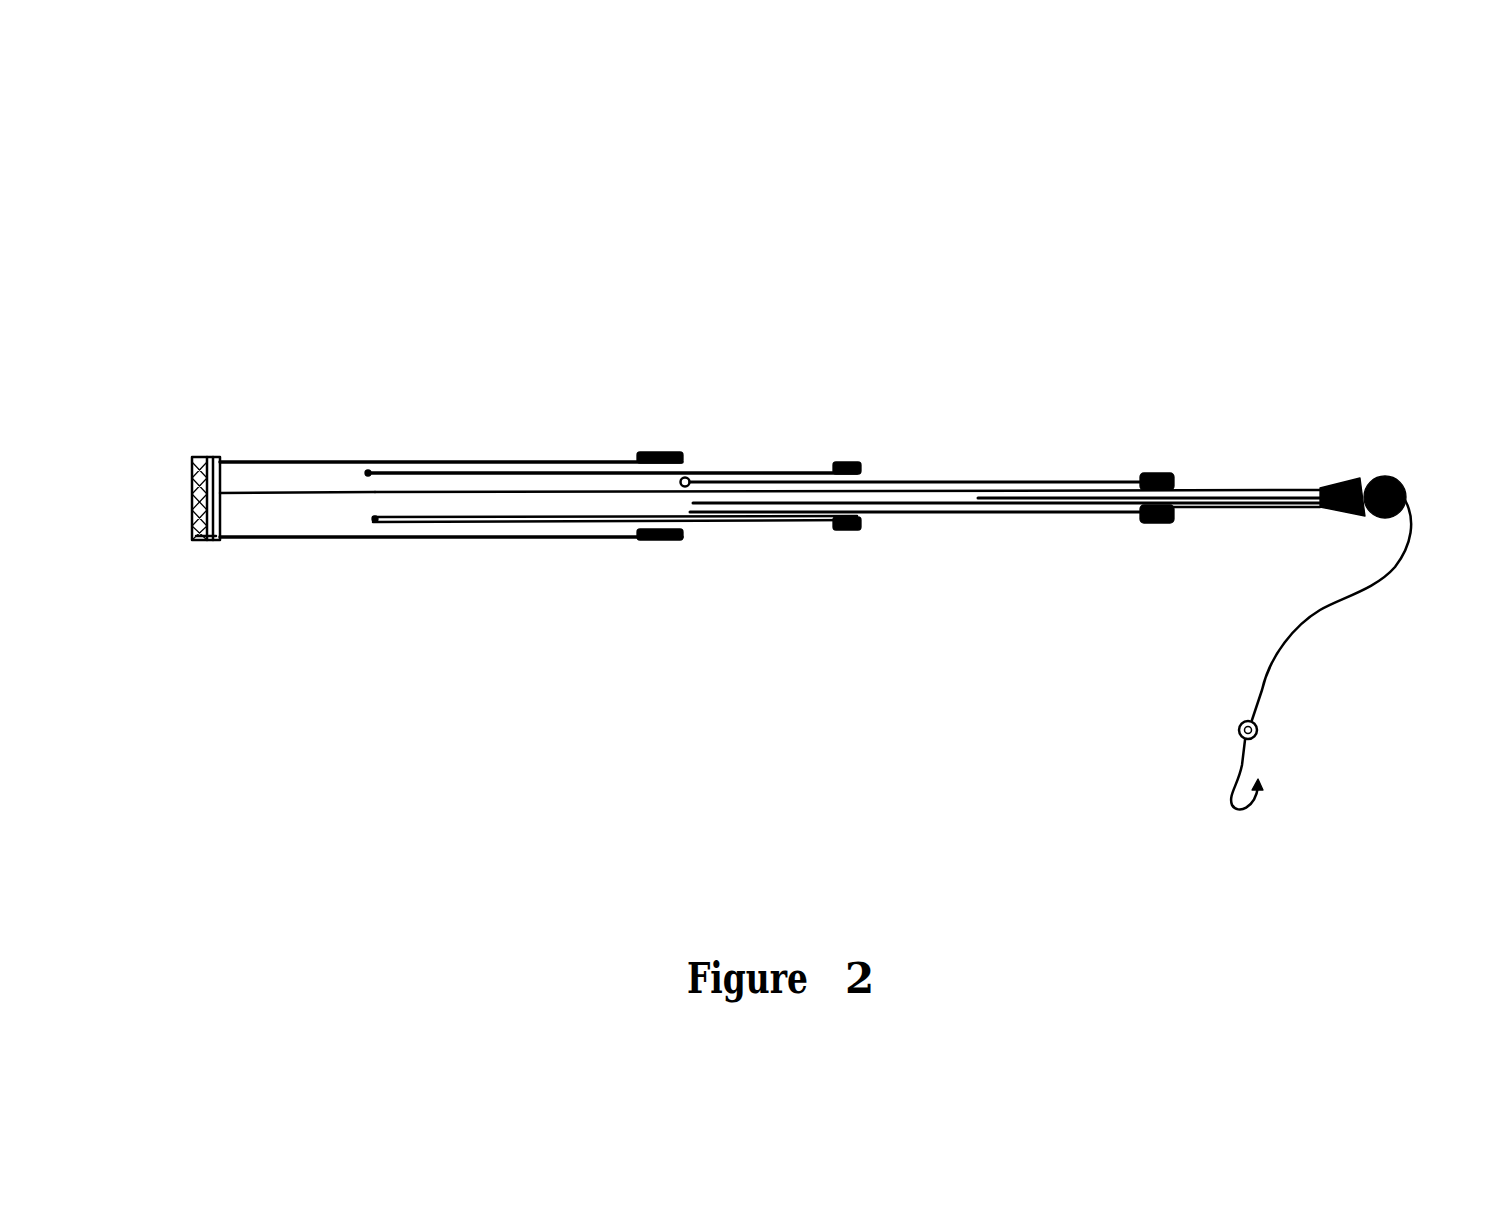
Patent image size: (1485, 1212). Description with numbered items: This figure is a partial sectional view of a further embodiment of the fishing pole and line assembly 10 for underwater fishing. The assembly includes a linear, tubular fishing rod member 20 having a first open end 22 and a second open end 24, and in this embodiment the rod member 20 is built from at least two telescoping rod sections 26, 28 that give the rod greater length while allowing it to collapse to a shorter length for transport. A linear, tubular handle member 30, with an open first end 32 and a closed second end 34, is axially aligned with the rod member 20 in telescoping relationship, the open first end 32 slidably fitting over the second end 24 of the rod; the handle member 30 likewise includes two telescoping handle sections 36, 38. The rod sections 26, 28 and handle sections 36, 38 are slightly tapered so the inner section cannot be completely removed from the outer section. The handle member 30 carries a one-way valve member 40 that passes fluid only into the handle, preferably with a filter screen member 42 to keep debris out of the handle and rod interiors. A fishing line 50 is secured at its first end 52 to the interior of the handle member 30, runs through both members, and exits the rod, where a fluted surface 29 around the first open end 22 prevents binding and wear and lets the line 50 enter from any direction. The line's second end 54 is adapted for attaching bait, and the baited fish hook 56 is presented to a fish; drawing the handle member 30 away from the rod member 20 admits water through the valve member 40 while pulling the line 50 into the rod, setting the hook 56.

The fishing pole and line assembly 10 is at (992, 238).
The fishing rod member 20 is at (1157, 452).
The first open end 22 is at (1413, 488).
The second open end 24 is at (372, 498).
The telescoping rod section 26 is at (963, 485).
The telescoping rod section 28 is at (1232, 490).
The fluted surface 29 is at (1378, 474).
The handle member 30 is at (612, 548).
The open first end 32 is at (868, 528).
The closed second end 34 is at (223, 542).
The telescoping handle section 36 is at (440, 470).
The telescoping handle section 38 is at (762, 515).
The one-way valve member 40 is at (209, 543).
The filter screen member 42 is at (187, 485).
The fishing line 50 is at (896, 490).
The first end 52 is at (268, 490).
The second end 54 is at (1243, 704).
The fish hook 56 is at (1220, 783).